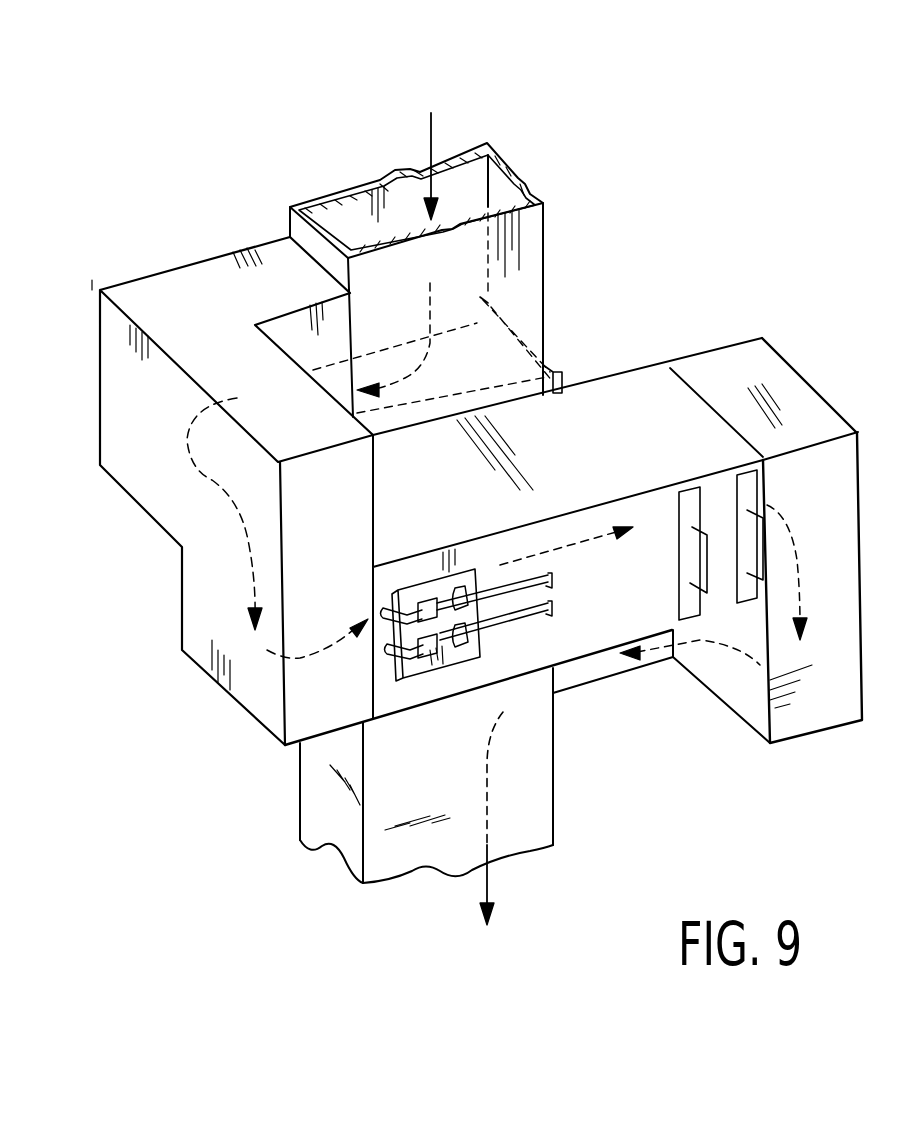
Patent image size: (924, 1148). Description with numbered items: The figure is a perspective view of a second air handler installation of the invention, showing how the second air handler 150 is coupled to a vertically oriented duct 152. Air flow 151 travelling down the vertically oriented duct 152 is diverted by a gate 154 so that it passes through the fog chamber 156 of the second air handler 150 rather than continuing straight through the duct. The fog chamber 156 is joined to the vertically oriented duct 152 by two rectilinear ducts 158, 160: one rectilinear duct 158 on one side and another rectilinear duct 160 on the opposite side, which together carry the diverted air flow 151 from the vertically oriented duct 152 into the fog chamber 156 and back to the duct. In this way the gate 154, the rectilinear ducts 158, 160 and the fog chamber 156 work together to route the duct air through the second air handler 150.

The second air handler 150 is at (621, 700).
The air flow 151 is at (432, 138).
The vertically oriented duct 152 is at (548, 270).
The gate 154 is at (560, 370).
The fog chamber 156 is at (640, 437).
The rectilinear duct 158 is at (203, 598).
The rectilinear duct 160 is at (813, 713).